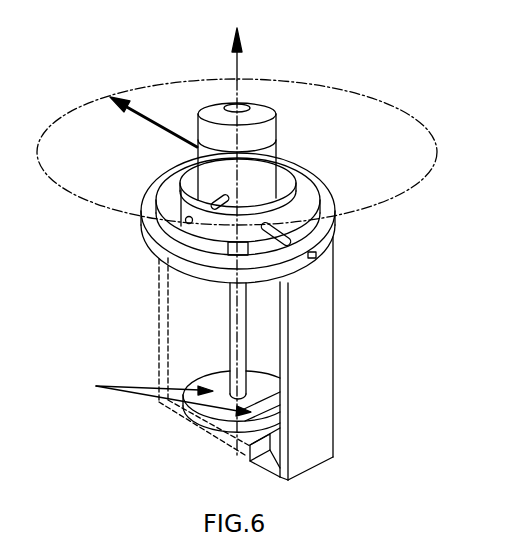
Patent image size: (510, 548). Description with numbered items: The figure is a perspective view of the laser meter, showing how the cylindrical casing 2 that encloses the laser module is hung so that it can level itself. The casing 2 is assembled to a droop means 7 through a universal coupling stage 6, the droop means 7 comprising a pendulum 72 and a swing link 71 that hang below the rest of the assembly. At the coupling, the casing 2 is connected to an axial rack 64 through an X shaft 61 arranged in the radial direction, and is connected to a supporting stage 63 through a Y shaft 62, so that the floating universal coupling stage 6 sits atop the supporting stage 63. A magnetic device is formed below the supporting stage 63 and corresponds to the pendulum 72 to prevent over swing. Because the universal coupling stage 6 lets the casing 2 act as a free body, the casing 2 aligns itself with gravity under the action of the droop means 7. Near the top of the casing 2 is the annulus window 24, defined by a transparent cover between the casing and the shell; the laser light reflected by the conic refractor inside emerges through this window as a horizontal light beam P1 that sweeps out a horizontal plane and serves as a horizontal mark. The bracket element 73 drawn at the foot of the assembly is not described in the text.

The horizontal light beam P1 is at (290, 83).
The cylindrical casing 2 is at (268, 177).
The annulus window 24 is at (257, 157).
The universal coupling stage 6 is at (378, 180).
The X shaft 61 is at (186, 219).
The Y shaft 62 is at (268, 243).
The supporting stage 63 is at (310, 342).
The axial rack 64 is at (200, 194).
The droop means 7 is at (112, 402).
The swing link 71 is at (230, 306).
The pendulum 72 is at (187, 418).
The bracket 73 is at (272, 462).